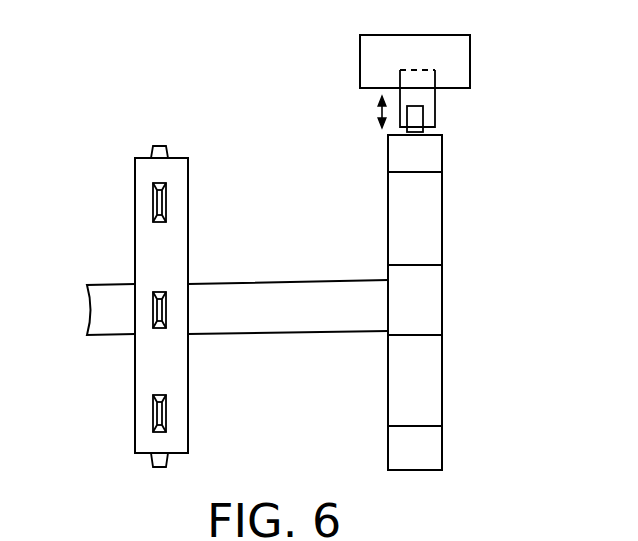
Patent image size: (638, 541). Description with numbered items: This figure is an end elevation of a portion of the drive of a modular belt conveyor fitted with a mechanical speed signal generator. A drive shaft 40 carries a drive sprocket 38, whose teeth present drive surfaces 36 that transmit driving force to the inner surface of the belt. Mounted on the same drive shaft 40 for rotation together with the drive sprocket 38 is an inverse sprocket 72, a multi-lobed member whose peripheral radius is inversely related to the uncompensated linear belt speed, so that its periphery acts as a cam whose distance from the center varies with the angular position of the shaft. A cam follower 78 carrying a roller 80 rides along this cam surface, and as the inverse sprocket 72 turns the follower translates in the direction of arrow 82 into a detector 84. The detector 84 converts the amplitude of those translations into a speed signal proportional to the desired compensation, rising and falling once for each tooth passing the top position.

The drive surface 36 is at (159, 296).
The drive sprocket 38 is at (140, 244).
The drive shaft 40 is at (242, 288).
The inverse sprocket 72 is at (443, 256).
The cam follower 78 is at (433, 95).
The roller 80 is at (418, 112).
The arrow 82 is at (378, 113).
The detector 84 is at (471, 53).